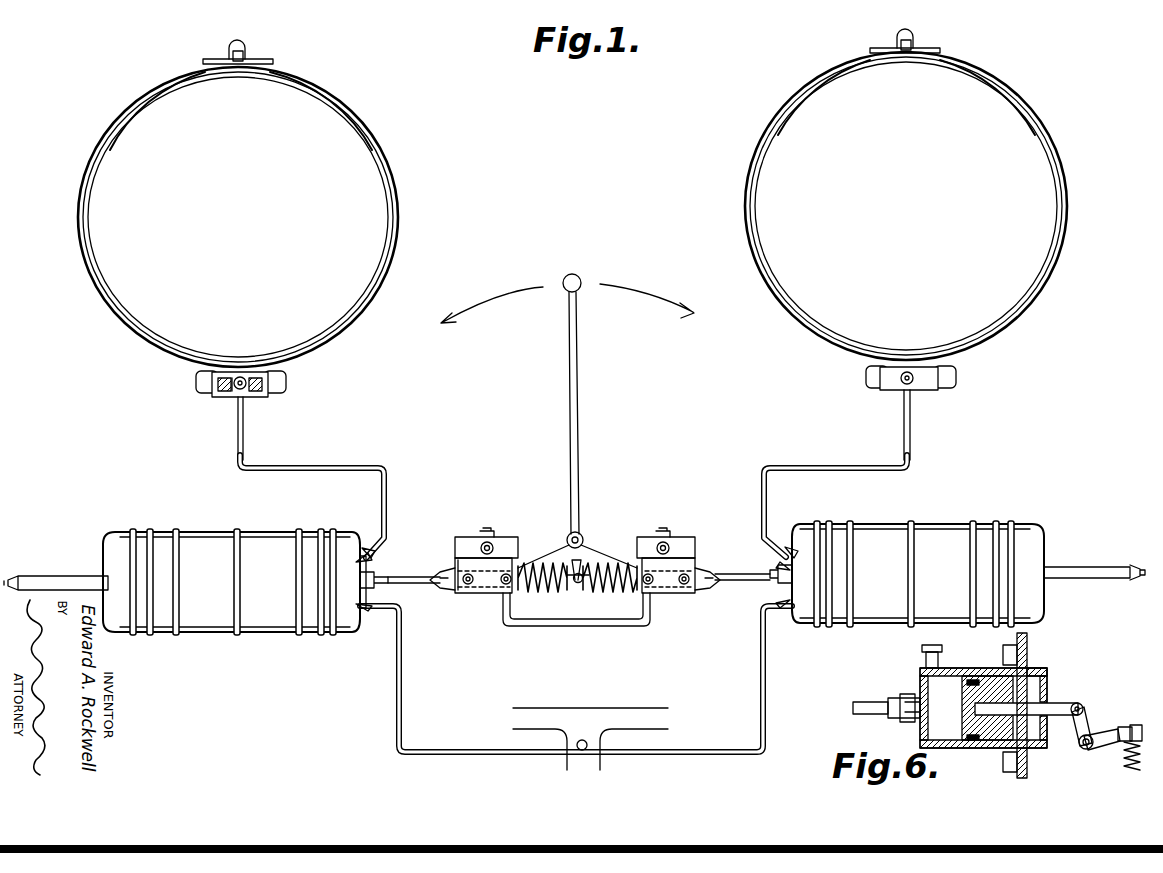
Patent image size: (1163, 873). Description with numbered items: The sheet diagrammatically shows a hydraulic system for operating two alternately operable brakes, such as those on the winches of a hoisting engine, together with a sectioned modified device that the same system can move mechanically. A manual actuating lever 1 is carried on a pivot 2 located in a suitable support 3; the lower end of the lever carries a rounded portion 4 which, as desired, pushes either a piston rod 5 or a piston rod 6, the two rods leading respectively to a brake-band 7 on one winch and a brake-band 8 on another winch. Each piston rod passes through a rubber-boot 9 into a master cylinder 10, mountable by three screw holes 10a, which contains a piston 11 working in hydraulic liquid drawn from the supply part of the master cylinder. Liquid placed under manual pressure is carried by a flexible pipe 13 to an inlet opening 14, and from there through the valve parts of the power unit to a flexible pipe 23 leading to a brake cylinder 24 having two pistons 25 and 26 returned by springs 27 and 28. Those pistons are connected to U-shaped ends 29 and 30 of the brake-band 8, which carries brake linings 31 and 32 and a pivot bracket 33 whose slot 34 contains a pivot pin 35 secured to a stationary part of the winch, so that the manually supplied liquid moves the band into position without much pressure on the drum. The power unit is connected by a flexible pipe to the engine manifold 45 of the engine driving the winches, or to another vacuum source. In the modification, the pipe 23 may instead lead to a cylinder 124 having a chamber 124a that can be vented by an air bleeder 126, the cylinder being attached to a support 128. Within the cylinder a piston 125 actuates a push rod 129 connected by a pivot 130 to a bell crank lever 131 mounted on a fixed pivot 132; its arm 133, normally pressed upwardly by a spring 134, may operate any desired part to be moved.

In FIG. 1, the manual actuating lever 1 is at (578, 396).
In FIG. 1, the pivot 2 is at (567, 535).
In FIG. 1, the support 3 is at (592, 552).
In FIG. 1, the rounded portion 4 is at (578, 584).
In FIG. 1, the piston rod 5 is at (606, 588).
In FIG. 1, the piston rod 6 is at (565, 600).
In FIG. 1, the brake-band 7 is at (745, 204).
In FIG. 1, the brake-band 8 is at (398, 200).
In FIG. 1, the rubber-boot 9 is at (540, 588).
In FIG. 1, the master cylinder 10 is at (472, 540).
In FIG. 1, the screw holes 10a is at (498, 543).
In FIG. 1, the piston 11 is at (475, 595).
In FIG. 1, the flexible pipe 13 is at (400, 578).
In FIG. 1, the inlet opening 14 is at (378, 572).
In FIG. 1, the flexible pipe 23 is at (388, 490).
In FIG. 6, the flexible pipe 23 is at (866, 703).
In FIG. 1, the brake cylinder 24 is at (250, 397).
In FIG. 1, the piston 25 is at (231, 395).
In FIG. 1, the piston 26 is at (242, 376).
In FIG. 1, the spring 27 is at (222, 392).
In FIG. 6, the spring 27 is at (1020, 764).
In FIG. 1, the spring 28 is at (256, 395).
In FIG. 1, the U-shaped end 29 is at (196, 382).
In FIG. 1, the U-shaped end 30 is at (286, 381).
In FIG. 1, the brake lining 31 is at (140, 105).
In FIG. 1, the brake lining 32 is at (300, 85).
In FIG. 1, the pivot bracket 33 is at (260, 60).
In FIG. 1, the slot 34 is at (244, 48).
In FIG. 1, the pivot pin 35 is at (232, 55).
In FIG. 1, the engine manifold 45 is at (596, 708).
In FIG. 6, the cylinder 124 is at (945, 748).
In FIG. 6, the chamber 124a is at (935, 722).
In FIG. 6, the piston 125 is at (1040, 670).
In FIG. 6, the air bleeder 126 is at (940, 660).
In FIG. 6, the support 128 is at (1028, 640).
In FIG. 6, the push rod 129 is at (1032, 704).
In FIG. 6, the pivot 130 is at (1084, 707).
In FIG. 6, the bell crank lever 131 is at (1086, 722).
In FIG. 6, the fixed pivot 132 is at (1084, 750).
In FIG. 6, the arm 133 is at (1134, 726).
In FIG. 6, the spring 134 is at (1130, 764).